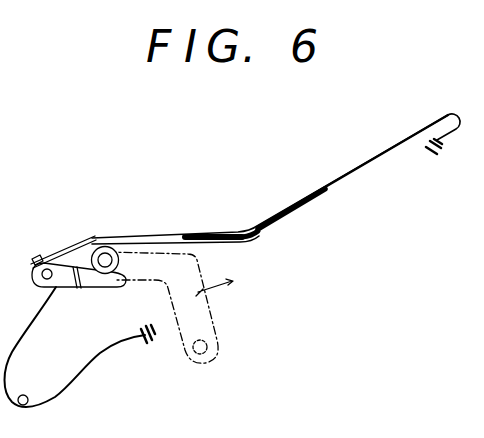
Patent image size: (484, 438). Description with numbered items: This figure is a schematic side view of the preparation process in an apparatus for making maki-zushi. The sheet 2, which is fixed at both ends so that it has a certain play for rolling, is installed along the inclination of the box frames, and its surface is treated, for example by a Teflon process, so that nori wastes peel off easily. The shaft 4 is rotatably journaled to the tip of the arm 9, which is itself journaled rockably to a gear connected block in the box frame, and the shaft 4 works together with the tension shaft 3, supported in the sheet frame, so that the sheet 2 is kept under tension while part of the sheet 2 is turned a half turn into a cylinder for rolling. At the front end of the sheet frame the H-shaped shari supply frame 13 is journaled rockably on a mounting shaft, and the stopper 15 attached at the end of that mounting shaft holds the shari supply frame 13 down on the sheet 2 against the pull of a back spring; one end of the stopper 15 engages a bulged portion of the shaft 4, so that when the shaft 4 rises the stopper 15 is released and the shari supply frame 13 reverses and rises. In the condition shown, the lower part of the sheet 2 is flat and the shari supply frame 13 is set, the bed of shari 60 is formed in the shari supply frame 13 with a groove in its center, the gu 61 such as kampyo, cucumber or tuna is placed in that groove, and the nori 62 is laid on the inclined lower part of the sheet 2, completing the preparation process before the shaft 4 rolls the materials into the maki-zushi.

The sheet 2 is at (276, 179).
The tension shaft 3 is at (28, 398).
The shaft 4 is at (103, 246).
The arm 9 is at (216, 328).
The shari supply frame 13 is at (67, 250).
The stopper 15 is at (78, 289).
The shari 60 is at (247, 228).
The gu 61 is at (215, 229).
The nori 62 is at (302, 200).